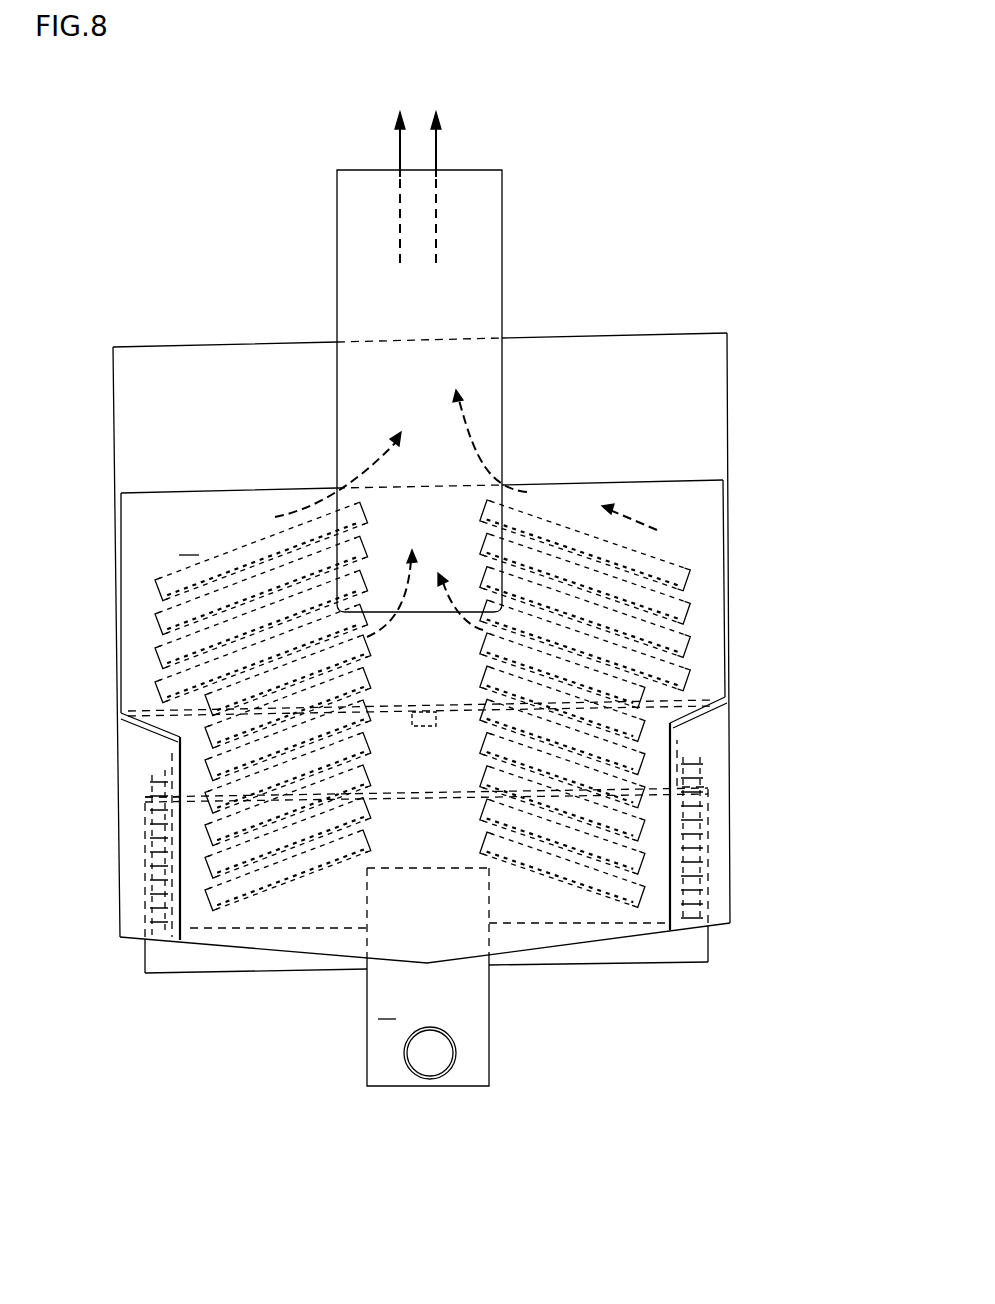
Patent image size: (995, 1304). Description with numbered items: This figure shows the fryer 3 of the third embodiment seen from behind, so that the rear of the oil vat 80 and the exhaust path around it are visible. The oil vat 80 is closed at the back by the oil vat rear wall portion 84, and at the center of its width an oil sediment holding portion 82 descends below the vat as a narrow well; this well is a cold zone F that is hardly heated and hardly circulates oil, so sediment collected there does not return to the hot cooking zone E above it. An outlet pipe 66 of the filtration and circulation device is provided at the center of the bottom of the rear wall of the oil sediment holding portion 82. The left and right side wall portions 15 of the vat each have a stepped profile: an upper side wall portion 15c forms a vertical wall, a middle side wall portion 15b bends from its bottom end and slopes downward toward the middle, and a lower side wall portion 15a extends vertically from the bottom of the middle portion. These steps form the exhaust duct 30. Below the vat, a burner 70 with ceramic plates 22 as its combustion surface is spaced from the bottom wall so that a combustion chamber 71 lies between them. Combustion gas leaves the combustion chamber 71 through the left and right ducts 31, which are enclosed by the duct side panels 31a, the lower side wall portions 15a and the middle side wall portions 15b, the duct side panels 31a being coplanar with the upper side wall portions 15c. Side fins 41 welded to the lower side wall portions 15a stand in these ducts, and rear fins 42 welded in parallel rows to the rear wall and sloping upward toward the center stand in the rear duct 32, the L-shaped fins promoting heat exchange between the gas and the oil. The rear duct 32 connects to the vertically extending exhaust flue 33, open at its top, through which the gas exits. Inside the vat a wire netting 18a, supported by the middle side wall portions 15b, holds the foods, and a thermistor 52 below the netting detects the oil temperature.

The fryer 3 is at (600, 188).
The exhaust flue 33 is at (502, 248).
The oil vat 80 is at (640, 318).
The oil vat rear wall portion 84 is at (680, 405).
The upper side wall portion 15c is at (113, 604).
The left and right ducts 31 is at (131, 757).
The side wall portions 15 is at (136, 882).
The duct side panels 31a is at (118, 806).
The side fins 41 is at (163, 841).
The exhaust duct 30 is at (735, 809).
The middle side wall portion 15b is at (716, 705).
The wire netting 18a is at (466, 705).
The thermistor 52 is at (410, 714).
The rear fins 42 is at (652, 548).
The ceramic plates 22 is at (379, 936).
The combustion chamber 71 is at (640, 950).
The lower side wall portion 15a is at (178, 939).
The rear duct 32 is at (540, 964).
The burner 70 is at (605, 968).
The oil sediment holding portion 82 is at (367, 1041).
The outlet pipe 66 is at (441, 1064).